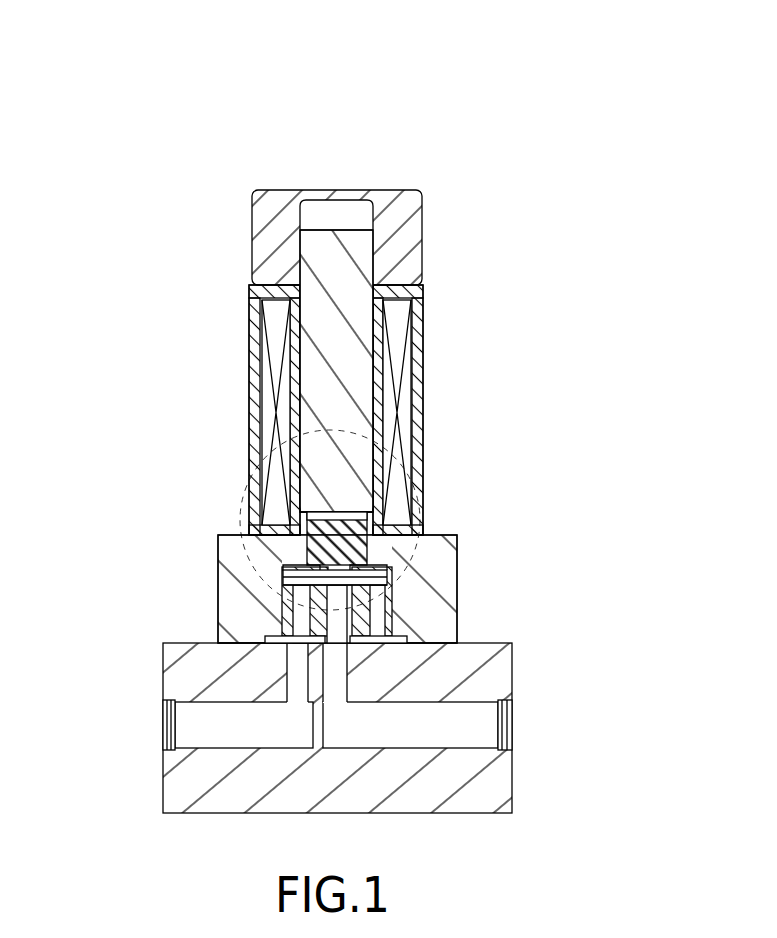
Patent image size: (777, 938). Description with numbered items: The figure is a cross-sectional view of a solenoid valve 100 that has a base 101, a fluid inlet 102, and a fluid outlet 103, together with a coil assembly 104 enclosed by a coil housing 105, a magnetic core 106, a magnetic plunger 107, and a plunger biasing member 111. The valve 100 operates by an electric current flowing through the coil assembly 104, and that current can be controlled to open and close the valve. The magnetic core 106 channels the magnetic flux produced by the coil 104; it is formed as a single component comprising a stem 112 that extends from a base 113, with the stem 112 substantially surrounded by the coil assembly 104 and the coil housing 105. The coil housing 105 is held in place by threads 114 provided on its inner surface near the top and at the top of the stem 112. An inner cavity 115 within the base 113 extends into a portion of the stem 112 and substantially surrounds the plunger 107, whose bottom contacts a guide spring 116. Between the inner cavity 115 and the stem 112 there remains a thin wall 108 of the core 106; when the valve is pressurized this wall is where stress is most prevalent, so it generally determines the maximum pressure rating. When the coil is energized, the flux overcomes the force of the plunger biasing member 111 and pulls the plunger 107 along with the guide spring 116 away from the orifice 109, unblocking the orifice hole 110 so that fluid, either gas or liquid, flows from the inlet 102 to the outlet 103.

The solenoid valve 100 is at (412, 130).
The base 101 is at (487, 641).
The fluid inlet 102 is at (135, 745).
The fluid outlet 103 is at (534, 740).
The coil assembly 104 is at (400, 333).
The coil housing 105 is at (418, 352).
The magnetic core 106 is at (338, 255).
The magnetic plunger 107 is at (368, 538).
The thin wall 108 is at (367, 501).
The orifice 109 is at (290, 586).
The orifice hole 110 is at (312, 606).
The plunger biasing member 111 is at (303, 542).
The stem 112 is at (327, 330).
The base 113 is at (218, 571).
The threads 114 is at (298, 249).
The inner cavity 115 is at (290, 566).
The guide spring 116 is at (283, 583).